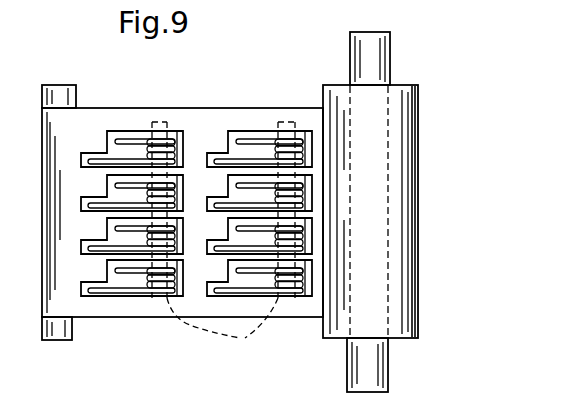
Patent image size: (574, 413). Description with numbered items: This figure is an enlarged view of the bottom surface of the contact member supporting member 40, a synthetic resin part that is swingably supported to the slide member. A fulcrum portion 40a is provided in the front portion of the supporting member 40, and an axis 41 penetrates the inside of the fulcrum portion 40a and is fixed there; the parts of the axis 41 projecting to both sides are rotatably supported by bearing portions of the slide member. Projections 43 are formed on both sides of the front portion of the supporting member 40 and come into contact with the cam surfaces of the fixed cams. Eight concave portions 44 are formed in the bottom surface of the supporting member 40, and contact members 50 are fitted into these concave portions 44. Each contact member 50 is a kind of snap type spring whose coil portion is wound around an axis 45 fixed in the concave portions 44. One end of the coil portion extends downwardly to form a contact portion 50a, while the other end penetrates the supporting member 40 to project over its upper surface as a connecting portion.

The contact member supporting member 40 is at (155, 88).
The fulcrum portion 40a is at (410, 170).
The axis 41 is at (378, 63).
The projections 43 is at (58, 92).
The concave portions 44 is at (236, 178).
The axis 45 is at (223, 242).
The contact member 50 is at (142, 245).
The contact portion 50a is at (90, 245).